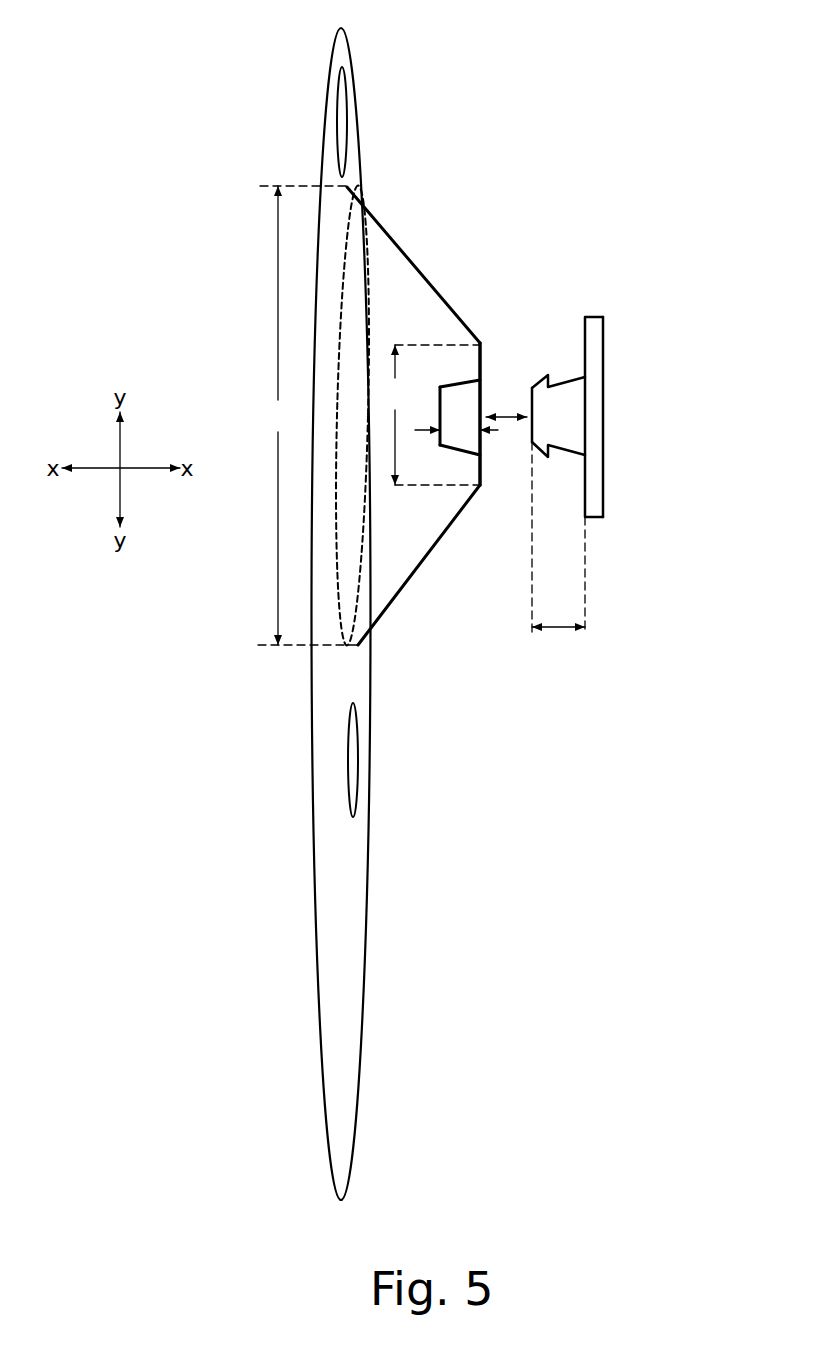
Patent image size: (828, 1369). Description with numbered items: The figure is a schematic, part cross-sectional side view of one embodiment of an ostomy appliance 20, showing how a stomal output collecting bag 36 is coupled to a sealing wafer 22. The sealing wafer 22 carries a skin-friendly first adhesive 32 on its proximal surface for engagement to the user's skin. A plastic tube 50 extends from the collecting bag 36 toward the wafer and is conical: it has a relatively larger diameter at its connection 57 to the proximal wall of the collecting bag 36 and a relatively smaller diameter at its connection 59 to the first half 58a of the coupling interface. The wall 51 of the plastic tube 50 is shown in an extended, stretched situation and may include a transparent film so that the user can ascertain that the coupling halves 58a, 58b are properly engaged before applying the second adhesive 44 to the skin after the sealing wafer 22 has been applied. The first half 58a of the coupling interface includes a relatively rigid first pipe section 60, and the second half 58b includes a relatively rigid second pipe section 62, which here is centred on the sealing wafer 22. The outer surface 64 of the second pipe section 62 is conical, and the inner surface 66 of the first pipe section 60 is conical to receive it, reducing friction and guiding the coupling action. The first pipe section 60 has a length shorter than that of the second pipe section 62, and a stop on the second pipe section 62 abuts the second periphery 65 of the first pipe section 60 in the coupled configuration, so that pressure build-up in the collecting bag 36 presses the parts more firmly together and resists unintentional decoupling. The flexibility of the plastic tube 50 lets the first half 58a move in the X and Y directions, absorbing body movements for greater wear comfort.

The ostomy appliance 20 is at (562, 106).
The sealing wafer 22 is at (633, 386).
The first adhesive 32 is at (605, 478).
The stomal output collecting bag 36 is at (335, 117).
The second adhesive 44 is at (347, 105).
The plastic tube 50 is at (447, 403).
The wall of the plastic tube 51 is at (420, 270).
The connection to the proximal wall 57 is at (350, 548).
The first half of the coupling interface 58a is at (475, 493).
The second half of the coupling interface 58b is at (613, 401).
The connection to the first half of the coupling interface 59 is at (460, 447).
The first pipe section 60 is at (466, 382).
The second pipe section 62 is at (572, 433).
The outer surface of the second pipe section 64 is at (580, 378).
The second periphery of the first pipe section 65 is at (440, 385).
The inner surface of the first pipe section 66 is at (480, 380).